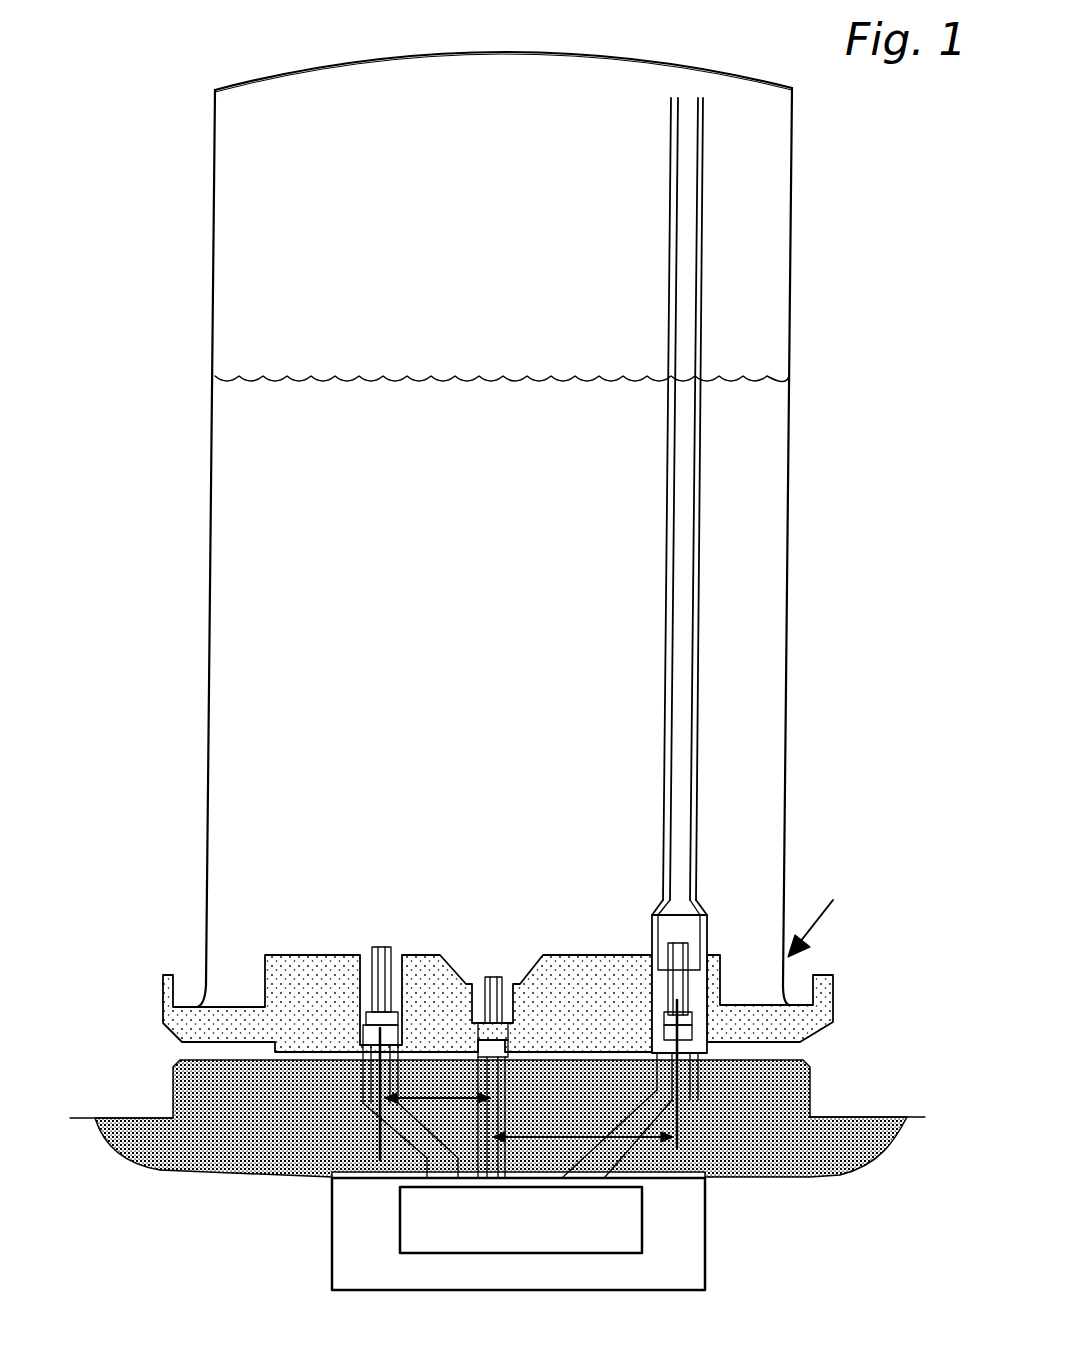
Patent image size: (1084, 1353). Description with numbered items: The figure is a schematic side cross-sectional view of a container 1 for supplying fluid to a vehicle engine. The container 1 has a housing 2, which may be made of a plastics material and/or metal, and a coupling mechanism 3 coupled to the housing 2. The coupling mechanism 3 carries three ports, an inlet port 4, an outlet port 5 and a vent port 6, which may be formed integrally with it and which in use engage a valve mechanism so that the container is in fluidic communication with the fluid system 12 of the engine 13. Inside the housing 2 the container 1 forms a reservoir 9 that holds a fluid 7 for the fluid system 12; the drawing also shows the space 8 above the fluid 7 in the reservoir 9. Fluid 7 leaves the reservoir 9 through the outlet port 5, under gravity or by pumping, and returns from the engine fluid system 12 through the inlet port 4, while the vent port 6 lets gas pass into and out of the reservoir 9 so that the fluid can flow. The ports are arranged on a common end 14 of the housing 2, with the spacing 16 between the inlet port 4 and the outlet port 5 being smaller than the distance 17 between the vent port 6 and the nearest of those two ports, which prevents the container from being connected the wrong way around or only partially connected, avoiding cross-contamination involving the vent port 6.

The container 1 is at (190, 563).
The housing 2 is at (207, 702).
The coupling mechanism 3 is at (163, 1003).
The inlet port 4 is at (366, 950).
The outlet port 5 is at (476, 986).
The vent port 6 is at (650, 955).
The fluid 7 is at (302, 402).
The head space 8 is at (270, 300).
The reservoir 9 is at (767, 493).
The fluid system 12 is at (612, 1228).
The engine 13 is at (693, 1237).
The common end 14 is at (834, 918).
The distance between sensors 4 and 5 16 is at (437, 1086).
The distance 17 is at (583, 1124).